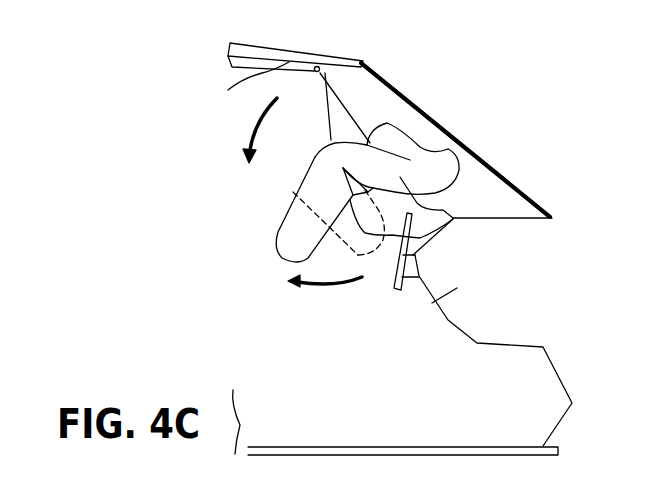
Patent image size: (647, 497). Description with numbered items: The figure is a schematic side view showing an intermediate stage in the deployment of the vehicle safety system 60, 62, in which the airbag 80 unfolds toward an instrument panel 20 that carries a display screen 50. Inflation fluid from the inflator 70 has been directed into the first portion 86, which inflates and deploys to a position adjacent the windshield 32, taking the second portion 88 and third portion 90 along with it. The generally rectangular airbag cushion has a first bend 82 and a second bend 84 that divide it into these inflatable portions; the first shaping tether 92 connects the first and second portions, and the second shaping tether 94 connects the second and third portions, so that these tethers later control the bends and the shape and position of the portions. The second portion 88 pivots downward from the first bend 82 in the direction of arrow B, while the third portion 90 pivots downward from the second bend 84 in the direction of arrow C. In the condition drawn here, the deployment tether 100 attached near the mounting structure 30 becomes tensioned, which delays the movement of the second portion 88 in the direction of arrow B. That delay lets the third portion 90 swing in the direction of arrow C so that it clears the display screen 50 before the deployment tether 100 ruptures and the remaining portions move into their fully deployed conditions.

The instrument panel 20 is at (434, 306).
The rail 30 is at (228, 90).
The windshield 32 is at (523, 199).
The display screen 50 is at (394, 287).
The vehicle safety system 60 is at (464, 131).
The arm 62 is at (420, 76).
The inflator 70 is at (317, 66).
The airbag 80 is at (390, 118).
The first bend 82 is at (447, 190).
The second bend 84 is at (328, 165).
The first portion 86 is at (365, 101).
The second portion 88 is at (455, 219).
The third portion 90 is at (295, 238).
The first shaping tether 92 is at (428, 150).
The second shaping tether 94 is at (417, 238).
The deployment tether 100 is at (330, 126).
The arrow B is at (256, 128).
The arrow C is at (331, 286).